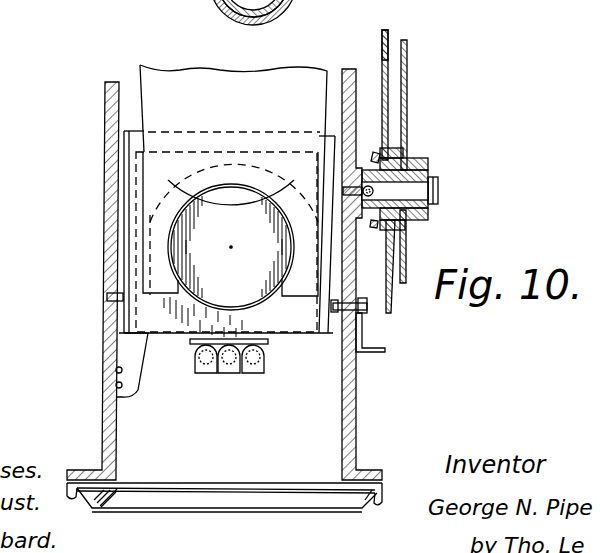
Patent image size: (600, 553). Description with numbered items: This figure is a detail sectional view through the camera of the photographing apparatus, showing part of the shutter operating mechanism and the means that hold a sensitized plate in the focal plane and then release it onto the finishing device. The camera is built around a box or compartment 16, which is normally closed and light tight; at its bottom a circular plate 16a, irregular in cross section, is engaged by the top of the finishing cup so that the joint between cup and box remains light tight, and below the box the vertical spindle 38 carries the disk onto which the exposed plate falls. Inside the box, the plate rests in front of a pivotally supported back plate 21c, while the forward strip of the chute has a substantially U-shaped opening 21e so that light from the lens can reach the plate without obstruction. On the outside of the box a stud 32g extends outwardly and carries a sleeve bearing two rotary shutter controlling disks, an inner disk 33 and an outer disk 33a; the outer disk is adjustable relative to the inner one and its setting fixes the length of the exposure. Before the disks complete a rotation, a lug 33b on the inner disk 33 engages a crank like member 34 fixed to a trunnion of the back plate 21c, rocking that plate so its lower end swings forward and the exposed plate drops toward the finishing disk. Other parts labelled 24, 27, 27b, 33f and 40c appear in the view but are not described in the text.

The box or compartment 16 is at (105, 382).
The circular plate 16a is at (107, 492).
The back plate 21c is at (130, 240).
The U-shaped opening 21e is at (308, 368).
The shaft 24 is at (450, 0).
The slide body 27 is at (233, 199).
The slide recess 27b is at (233, 168).
The stud 32g is at (413, 193).
The inner rotary shutter controlling disk 33 is at (382, 56).
The outer rotary shutter controlling disk 33a is at (408, 78).
The lug 33b is at (383, 36).
The lever lug 33f is at (374, 152).
The crank like member 34 is at (378, 357).
The vertical spindle 38 is at (242, 18).
The gear wheel 40c is at (168, 9).